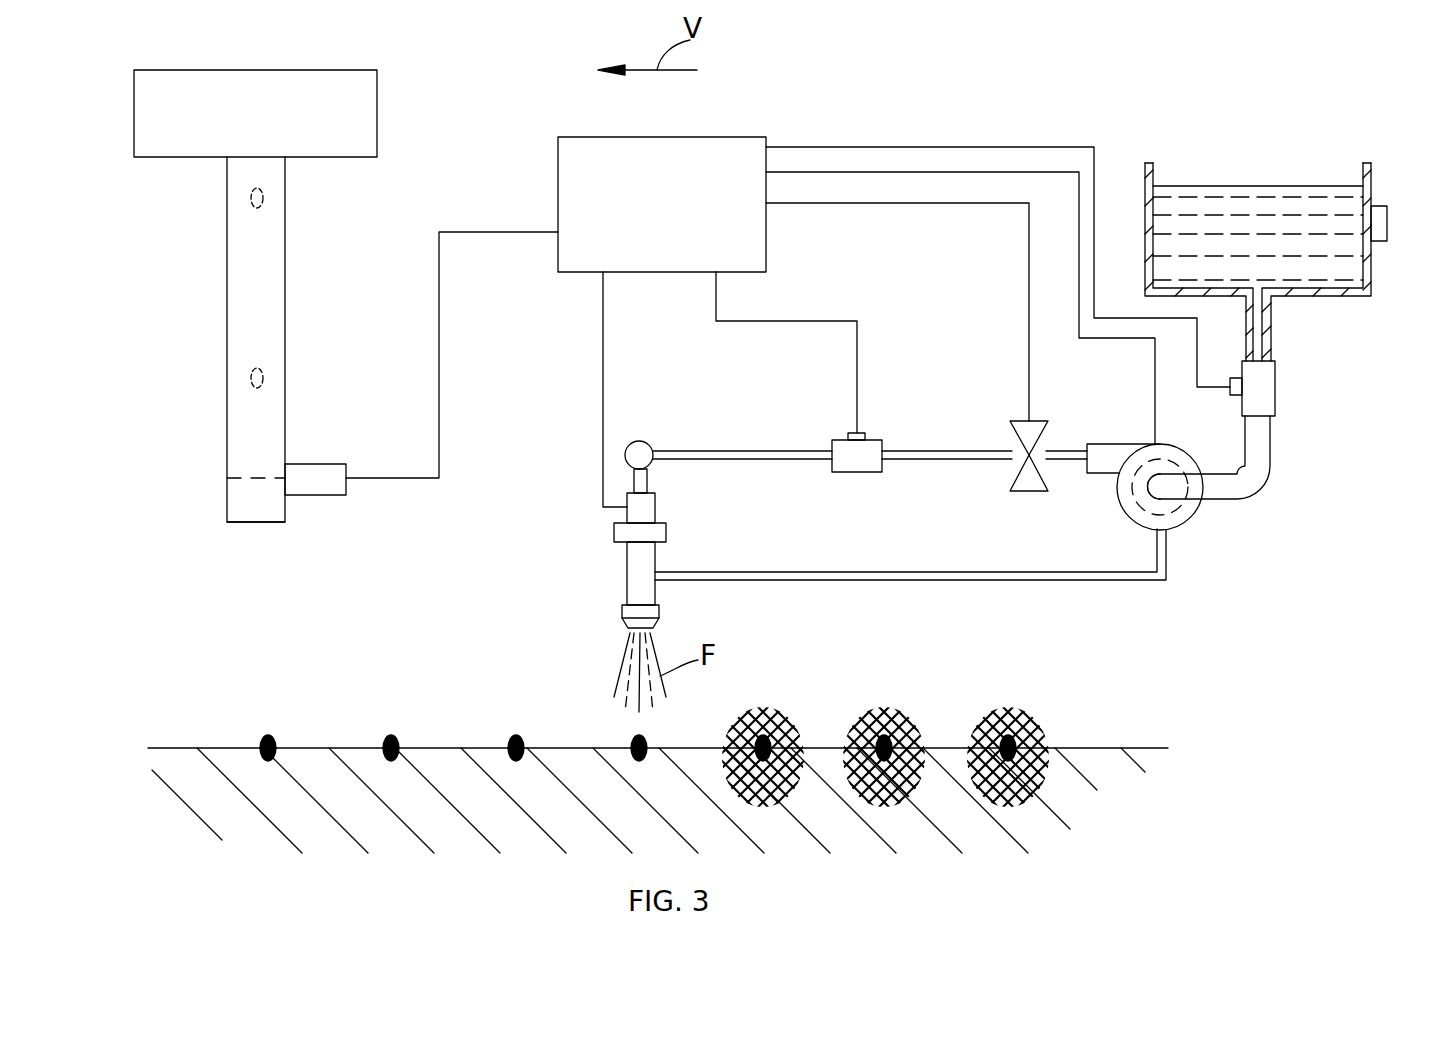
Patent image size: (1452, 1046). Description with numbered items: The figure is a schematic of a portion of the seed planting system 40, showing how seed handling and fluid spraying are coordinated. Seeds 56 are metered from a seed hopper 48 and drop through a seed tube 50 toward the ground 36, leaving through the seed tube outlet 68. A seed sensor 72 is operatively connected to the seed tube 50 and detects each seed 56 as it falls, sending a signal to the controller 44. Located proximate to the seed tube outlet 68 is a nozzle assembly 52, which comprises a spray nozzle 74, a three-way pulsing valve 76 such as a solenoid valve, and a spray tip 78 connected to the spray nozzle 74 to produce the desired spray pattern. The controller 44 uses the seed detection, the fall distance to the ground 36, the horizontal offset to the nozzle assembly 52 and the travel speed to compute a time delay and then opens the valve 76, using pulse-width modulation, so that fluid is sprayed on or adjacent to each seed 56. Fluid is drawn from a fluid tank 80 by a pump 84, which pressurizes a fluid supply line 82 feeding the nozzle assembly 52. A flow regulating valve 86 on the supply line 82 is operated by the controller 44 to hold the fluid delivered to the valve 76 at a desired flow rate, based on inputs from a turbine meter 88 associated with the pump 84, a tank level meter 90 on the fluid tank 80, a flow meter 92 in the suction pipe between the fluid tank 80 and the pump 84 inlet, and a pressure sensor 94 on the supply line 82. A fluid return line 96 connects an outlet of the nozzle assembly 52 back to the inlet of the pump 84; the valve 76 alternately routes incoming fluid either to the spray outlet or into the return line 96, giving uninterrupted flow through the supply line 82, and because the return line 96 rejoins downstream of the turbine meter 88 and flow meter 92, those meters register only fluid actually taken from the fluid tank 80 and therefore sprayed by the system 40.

The ground 36 is at (174, 748).
The seed planting system 40 is at (1064, 101).
The controller 44 is at (675, 221).
The seed hopper 48 is at (272, 130).
The seed tube 50 is at (227, 302).
The nozzle assembly 52 is at (595, 577).
The seed 56 is at (251, 204).
The seed tube outlet 68 is at (232, 525).
The seed sensor 72 is at (318, 464).
The spray nozzle 74 is at (627, 551).
The valve 76 is at (655, 503).
The spray tip 78 is at (620, 616).
The fluid tank 80 is at (1145, 178).
The fluid supply line 82 is at (735, 451).
The pump 84 is at (1180, 522).
The flow regulating valve 86 is at (1025, 491).
The turbine meter 88 is at (1170, 455).
The tank level meter 90 is at (1388, 222).
The flow meter 92 is at (1277, 381).
The pressure sensor 94 is at (855, 474).
The fluid return line 96 is at (782, 582).